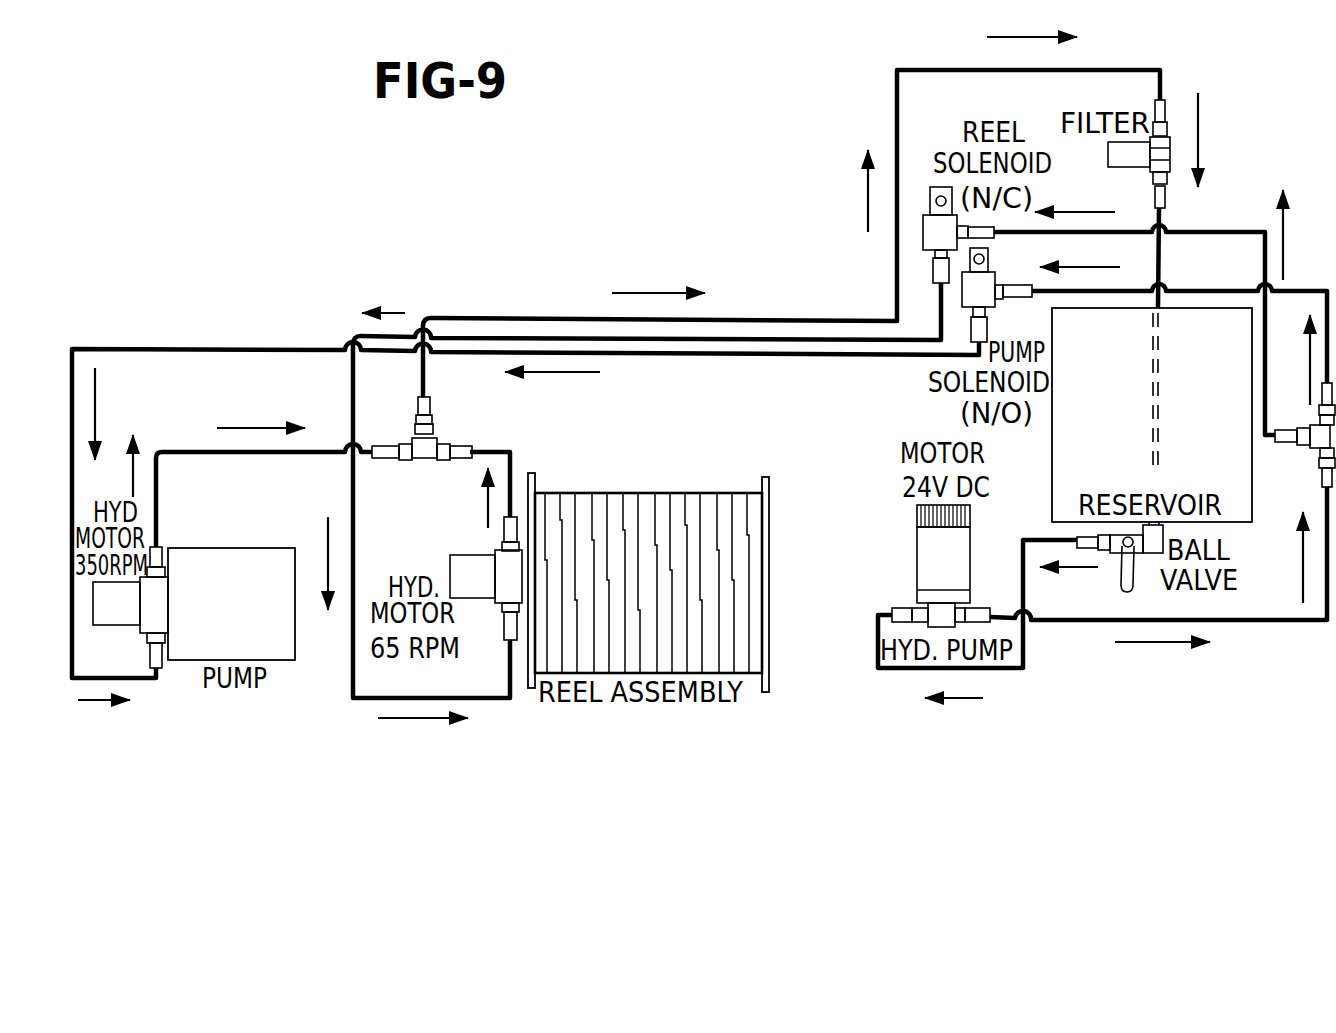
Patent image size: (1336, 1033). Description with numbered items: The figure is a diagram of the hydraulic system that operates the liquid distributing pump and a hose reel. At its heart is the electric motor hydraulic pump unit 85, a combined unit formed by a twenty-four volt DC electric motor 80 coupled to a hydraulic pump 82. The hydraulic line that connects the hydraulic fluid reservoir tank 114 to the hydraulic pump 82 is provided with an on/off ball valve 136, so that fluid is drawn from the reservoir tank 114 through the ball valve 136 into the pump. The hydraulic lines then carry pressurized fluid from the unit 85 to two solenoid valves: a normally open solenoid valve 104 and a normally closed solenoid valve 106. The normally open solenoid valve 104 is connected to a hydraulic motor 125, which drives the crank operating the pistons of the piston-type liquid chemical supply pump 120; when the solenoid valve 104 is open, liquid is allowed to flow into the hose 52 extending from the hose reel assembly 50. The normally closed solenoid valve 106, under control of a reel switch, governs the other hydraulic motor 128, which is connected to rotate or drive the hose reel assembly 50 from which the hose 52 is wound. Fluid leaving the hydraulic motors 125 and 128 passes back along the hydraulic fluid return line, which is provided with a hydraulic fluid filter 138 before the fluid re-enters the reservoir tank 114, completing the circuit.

The hose reel assembly 50 is at (703, 484).
The hose 52 is at (650, 500).
The 24 volt DC electric motor 80 is at (918, 550).
The hydraulic pump 82 is at (938, 612).
The electric motor hydraulic pump unit 85 is at (910, 512).
The normally open solenoid valve 104 is at (962, 290).
The normally closed solenoid valve 106 is at (930, 235).
The hydraulic reservoir tank 114 is at (1218, 373).
The liquid chemical supply pump 120 is at (240, 553).
The hydraulic motor 125 is at (125, 604).
The hydraulic motor 128 is at (465, 560).
The on/off ball valve 136 is at (1122, 583).
The hydraulic fluid filter 138 is at (1130, 160).